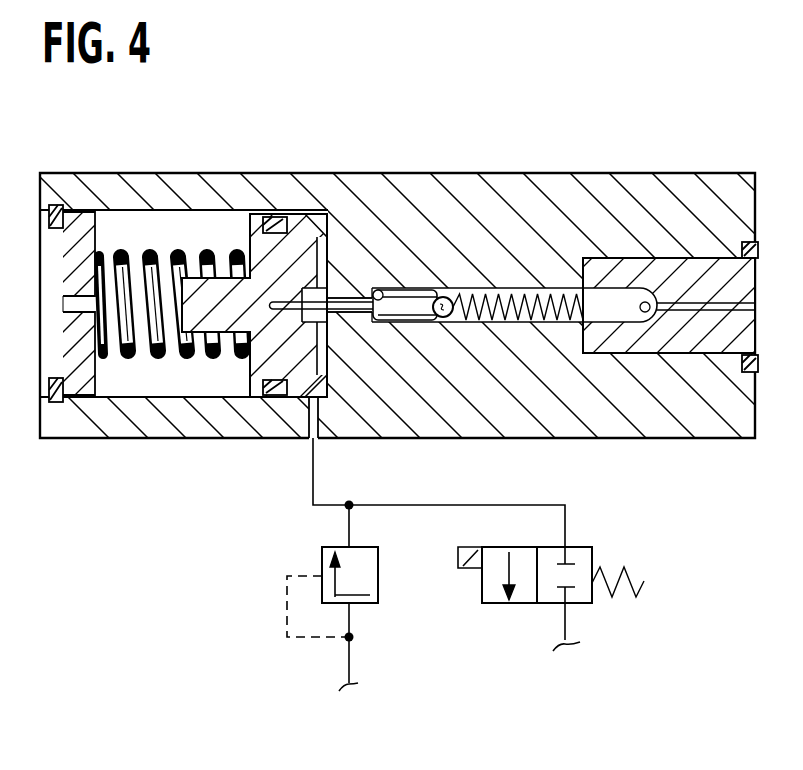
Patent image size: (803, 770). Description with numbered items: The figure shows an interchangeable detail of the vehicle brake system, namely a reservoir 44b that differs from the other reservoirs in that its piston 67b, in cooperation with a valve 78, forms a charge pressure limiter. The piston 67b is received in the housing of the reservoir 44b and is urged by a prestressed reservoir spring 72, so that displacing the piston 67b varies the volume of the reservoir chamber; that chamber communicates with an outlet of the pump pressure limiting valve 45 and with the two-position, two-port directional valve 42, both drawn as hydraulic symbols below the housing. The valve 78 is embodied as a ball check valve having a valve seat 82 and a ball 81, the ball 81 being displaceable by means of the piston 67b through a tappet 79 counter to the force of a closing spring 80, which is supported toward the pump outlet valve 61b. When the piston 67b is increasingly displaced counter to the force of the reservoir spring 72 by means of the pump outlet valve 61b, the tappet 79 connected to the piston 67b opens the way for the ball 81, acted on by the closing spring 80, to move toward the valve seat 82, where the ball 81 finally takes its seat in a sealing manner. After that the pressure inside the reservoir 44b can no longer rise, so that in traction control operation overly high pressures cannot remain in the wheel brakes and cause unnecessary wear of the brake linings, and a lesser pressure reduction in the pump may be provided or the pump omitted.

The reservoir 44b is at (118, 442).
The reservoir spring 72 is at (180, 250).
The piston 67b is at (250, 278).
The valve seat 82 is at (382, 286).
The valve 78 is at (415, 288).
The tappet 79 is at (383, 324).
The ball 81 is at (456, 324).
The closing spring 80 is at (530, 324).
The pump outlet valve 61b is at (630, 280).
The pump pressure limiting valve 45 is at (372, 573).
The 2/2-way valve 42 is at (550, 595).